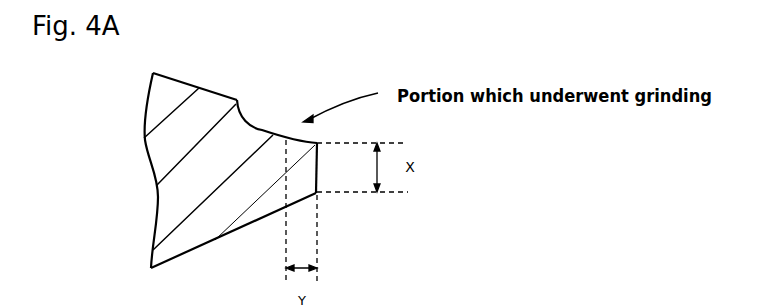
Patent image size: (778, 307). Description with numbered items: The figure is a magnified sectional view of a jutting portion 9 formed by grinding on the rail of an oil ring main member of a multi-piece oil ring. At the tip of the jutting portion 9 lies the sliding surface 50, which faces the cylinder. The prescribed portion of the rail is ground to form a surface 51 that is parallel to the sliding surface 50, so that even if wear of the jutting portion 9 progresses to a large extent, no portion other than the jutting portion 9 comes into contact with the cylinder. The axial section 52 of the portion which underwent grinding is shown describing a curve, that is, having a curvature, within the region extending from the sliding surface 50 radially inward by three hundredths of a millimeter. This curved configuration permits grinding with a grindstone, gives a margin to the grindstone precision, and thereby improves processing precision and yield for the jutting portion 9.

The surface 51 is at (237, 100).
The axial section of the portion which underwent grinding 52 is at (263, 127).
The jutting portion 9 is at (290, 165).
The sliding surface 50 is at (317, 175).